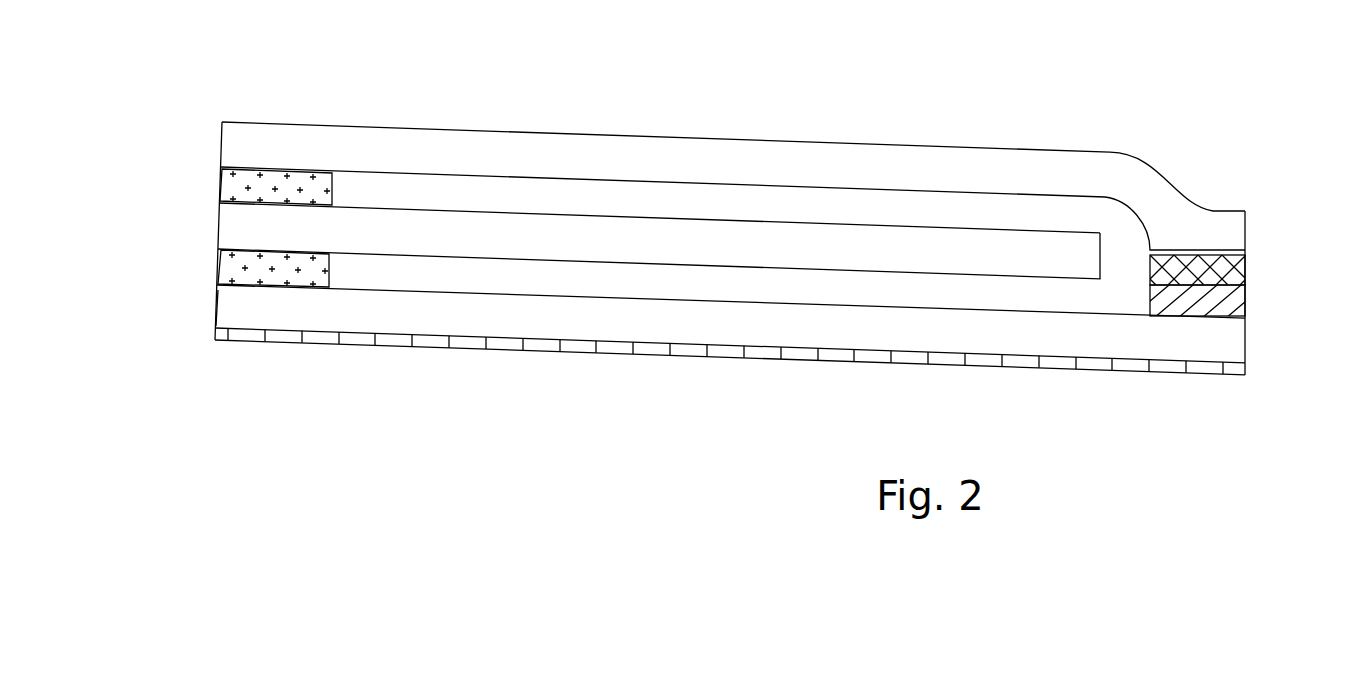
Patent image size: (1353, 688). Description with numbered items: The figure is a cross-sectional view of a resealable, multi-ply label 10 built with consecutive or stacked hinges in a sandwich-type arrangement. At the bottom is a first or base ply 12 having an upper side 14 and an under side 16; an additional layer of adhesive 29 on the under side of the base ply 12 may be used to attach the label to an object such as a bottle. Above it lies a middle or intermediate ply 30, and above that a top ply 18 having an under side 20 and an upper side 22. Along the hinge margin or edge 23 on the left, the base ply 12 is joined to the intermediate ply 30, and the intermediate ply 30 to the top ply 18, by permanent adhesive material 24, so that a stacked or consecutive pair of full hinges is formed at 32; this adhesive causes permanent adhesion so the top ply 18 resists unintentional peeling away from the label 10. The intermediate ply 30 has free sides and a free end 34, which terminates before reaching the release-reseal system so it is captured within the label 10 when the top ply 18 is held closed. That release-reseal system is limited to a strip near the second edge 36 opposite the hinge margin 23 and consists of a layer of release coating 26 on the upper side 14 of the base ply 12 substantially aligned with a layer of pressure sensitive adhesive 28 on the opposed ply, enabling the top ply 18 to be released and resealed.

The multi-ply label 10 is at (646, 477).
The base ply 12 is at (215, 303).
The upper side of base ply 14 is at (418, 288).
The under side of base ply 16 is at (318, 332).
The top ply 18 is at (285, 118).
The under side of top ply 20 is at (442, 173).
The upper side of top ply 22 is at (478, 129).
The hinge margin 23 is at (178, 158).
The permanent adhesive material 24 is at (220, 186).
The release coating 26 is at (1246, 302).
The pressure sensitive adhesive 28 is at (1246, 273).
The additional layer of adhesive 29 is at (393, 348).
The intermediate ply 30 is at (622, 210).
The hinged edge 32 is at (258, 228).
The free end 34 is at (1103, 238).
The second edge 36 is at (1273, 238).